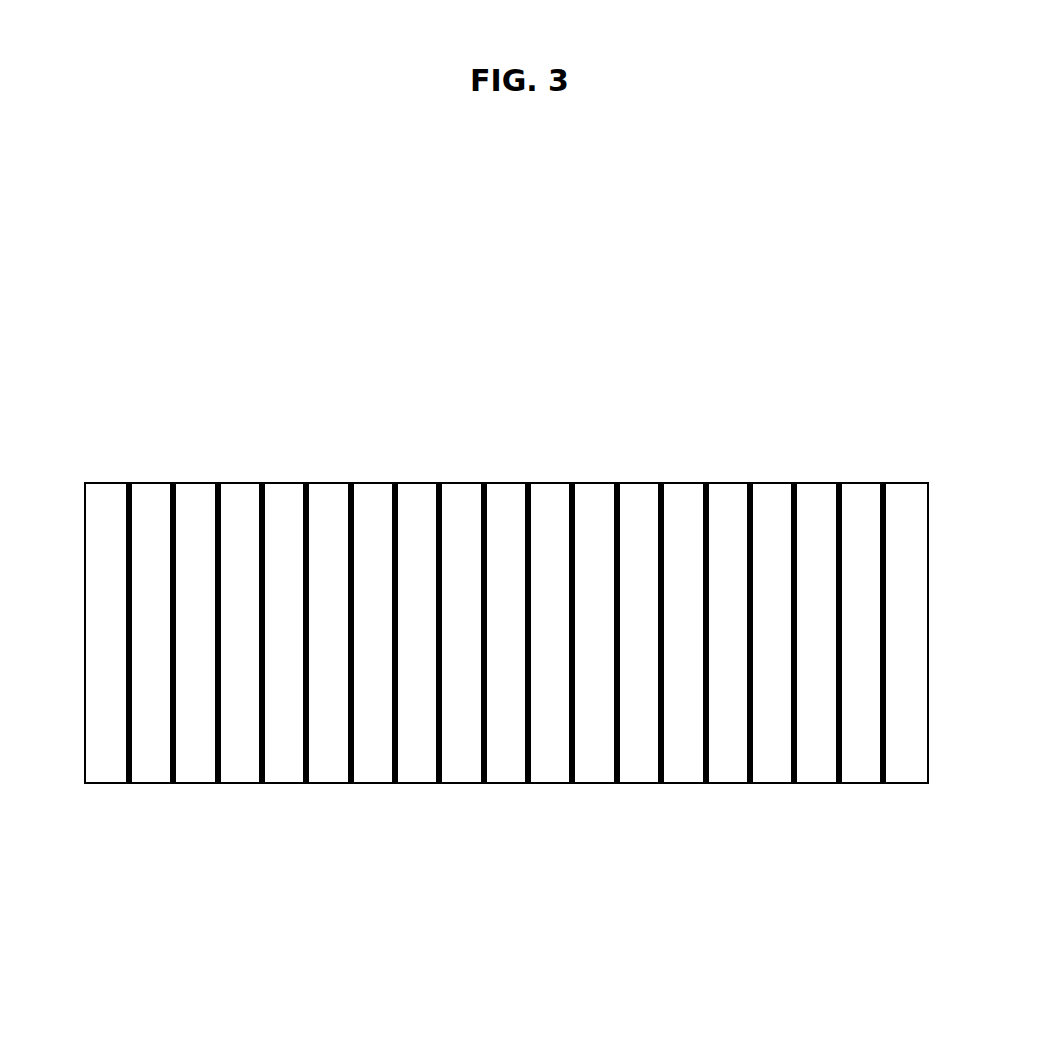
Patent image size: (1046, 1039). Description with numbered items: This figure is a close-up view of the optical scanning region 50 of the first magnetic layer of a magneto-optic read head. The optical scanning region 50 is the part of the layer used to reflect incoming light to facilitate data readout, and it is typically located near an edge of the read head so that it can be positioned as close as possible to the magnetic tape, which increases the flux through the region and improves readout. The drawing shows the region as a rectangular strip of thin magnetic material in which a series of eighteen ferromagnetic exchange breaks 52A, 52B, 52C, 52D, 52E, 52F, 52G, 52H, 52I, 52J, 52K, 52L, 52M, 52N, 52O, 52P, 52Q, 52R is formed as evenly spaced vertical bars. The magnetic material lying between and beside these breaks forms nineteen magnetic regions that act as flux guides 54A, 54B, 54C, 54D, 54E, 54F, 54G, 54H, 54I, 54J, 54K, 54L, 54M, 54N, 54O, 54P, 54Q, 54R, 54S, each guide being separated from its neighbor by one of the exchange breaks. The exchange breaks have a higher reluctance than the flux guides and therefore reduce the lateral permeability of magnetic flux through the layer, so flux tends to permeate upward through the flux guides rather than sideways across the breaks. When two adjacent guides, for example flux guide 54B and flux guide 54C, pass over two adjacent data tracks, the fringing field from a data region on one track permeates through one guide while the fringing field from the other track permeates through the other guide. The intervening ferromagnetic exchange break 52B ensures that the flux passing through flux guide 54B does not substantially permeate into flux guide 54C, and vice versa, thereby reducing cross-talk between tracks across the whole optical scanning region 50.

The optical scanning region 50 is at (509, 316).
The ferromagnetic exchange break 52A is at (129, 483).
The ferromagnetic exchange break 52B is at (173, 483).
The ferromagnetic exchange break 52C is at (218, 483).
The ferromagnetic exchange break 52D is at (262, 483).
The ferromagnetic exchange break 52E is at (306, 483).
The ferromagnetic exchange break 52F is at (351, 483).
The ferromagnetic exchange break 52G is at (395, 483).
The ferromagnetic exchange break 52H is at (439, 483).
The ferromagnetic exchange break 52I is at (484, 483).
The ferromagnetic exchange break 52J is at (528, 483).
The ferromagnetic exchange break 52K is at (572, 483).
The ferromagnetic exchange break 52L is at (617, 483).
The ferromagnetic exchange break 52M is at (661, 483).
The ferromagnetic exchange break 52N is at (706, 483).
The ferromagnetic exchange break 52O is at (750, 483).
The ferromagnetic exchange break 52P is at (794, 483).
The ferromagnetic exchange break 52Q is at (839, 483).
The ferromagnetic exchange break 52R is at (883, 483).
The flux guide 54A is at (104, 763).
The flux guide 54B is at (153, 763).
The flux guide 54C is at (193, 763).
The flux guide 54D is at (242, 763).
The flux guide 54E is at (281, 763).
The flux guide 54F is at (330, 763).
The flux guide 54G is at (370, 763).
The flux guide 54H is at (419, 763).
The flux guide 54I is at (459, 763).
The flux guide 54J is at (508, 763).
The flux guide 54K is at (547, 763).
The flux guide 54L is at (596, 763).
The flux guide 54M is at (636, 763).
The flux guide 54N is at (686, 763).
The flux guide 54O is at (725, 763).
The flux guide 54P is at (774, 763).
The flux guide 54Q is at (813, 763).
The flux guide 54R is at (863, 763).
The flux guide 54S is at (903, 763).